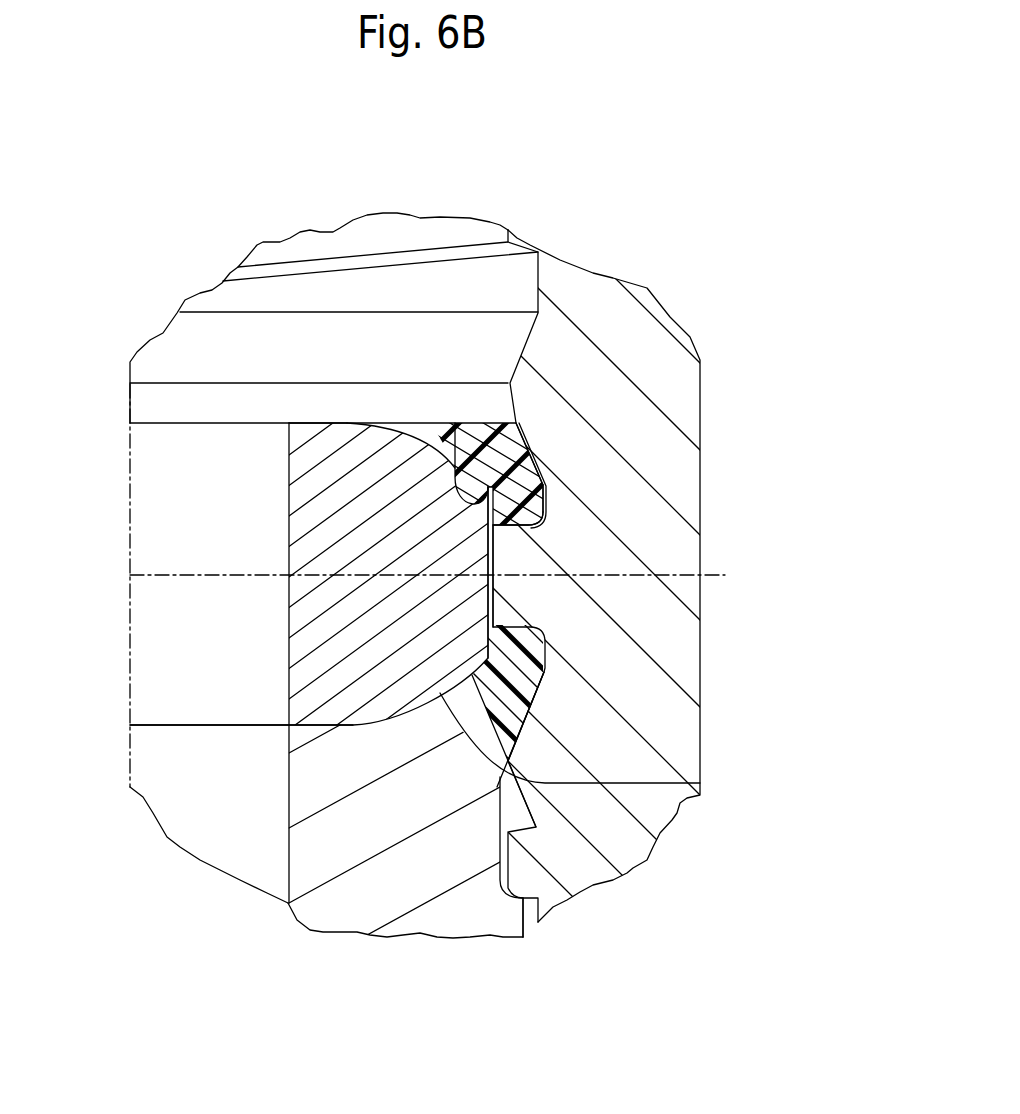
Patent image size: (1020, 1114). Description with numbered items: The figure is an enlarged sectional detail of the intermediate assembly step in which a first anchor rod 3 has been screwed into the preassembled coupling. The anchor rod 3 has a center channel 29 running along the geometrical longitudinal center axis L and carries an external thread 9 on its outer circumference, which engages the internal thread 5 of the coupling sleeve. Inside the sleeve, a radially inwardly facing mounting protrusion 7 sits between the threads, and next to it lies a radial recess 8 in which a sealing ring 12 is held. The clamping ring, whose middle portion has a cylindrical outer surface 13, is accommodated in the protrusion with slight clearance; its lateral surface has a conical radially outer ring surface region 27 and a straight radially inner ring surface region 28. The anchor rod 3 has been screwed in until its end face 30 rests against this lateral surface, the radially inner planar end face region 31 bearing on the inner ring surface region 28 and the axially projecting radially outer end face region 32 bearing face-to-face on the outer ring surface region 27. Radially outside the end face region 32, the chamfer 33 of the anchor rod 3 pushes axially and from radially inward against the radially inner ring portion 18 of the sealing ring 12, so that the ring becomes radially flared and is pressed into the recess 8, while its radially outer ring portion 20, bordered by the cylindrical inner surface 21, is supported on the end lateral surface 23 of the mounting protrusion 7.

The geometrical longitudinal center axis L is at (128, 396).
The anchor rod 3 is at (363, 848).
The internal thread 5 is at (520, 236).
The mounting protrusion 7 is at (513, 560).
The radial recess 8 is at (547, 647).
The external thread 9 is at (510, 915).
The sealing ring 12 is at (542, 456).
The cylindrical outer surface 13 is at (487, 594).
The radially inner ring portion 18 is at (470, 442).
The radially outer ring portion 20 is at (533, 490).
The cylindrical inner surface 21 is at (455, 423).
The end lateral surface of the mounting protrusion 23 is at (518, 512).
The radially outer ring surface region 27 is at (700, 783).
The radially inner ring surface region 28 is at (325, 727).
The center channel 29 is at (195, 777).
The end face 30 is at (305, 428).
The radially inner planar end face region 31 is at (185, 423).
The radially outer end face region 32 is at (455, 462).
The chamfer 33 is at (507, 723).